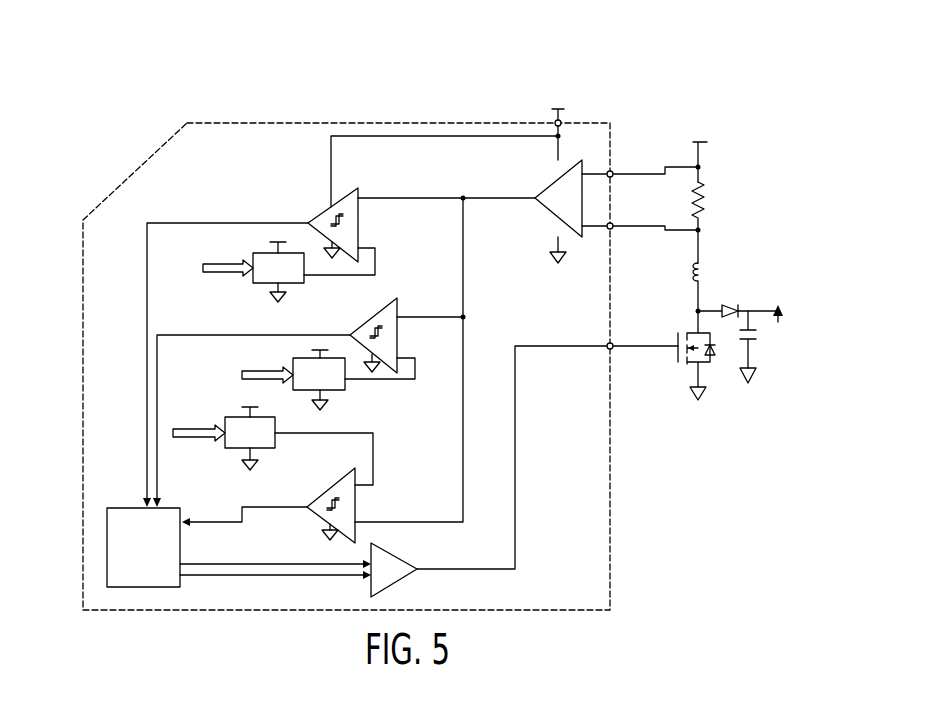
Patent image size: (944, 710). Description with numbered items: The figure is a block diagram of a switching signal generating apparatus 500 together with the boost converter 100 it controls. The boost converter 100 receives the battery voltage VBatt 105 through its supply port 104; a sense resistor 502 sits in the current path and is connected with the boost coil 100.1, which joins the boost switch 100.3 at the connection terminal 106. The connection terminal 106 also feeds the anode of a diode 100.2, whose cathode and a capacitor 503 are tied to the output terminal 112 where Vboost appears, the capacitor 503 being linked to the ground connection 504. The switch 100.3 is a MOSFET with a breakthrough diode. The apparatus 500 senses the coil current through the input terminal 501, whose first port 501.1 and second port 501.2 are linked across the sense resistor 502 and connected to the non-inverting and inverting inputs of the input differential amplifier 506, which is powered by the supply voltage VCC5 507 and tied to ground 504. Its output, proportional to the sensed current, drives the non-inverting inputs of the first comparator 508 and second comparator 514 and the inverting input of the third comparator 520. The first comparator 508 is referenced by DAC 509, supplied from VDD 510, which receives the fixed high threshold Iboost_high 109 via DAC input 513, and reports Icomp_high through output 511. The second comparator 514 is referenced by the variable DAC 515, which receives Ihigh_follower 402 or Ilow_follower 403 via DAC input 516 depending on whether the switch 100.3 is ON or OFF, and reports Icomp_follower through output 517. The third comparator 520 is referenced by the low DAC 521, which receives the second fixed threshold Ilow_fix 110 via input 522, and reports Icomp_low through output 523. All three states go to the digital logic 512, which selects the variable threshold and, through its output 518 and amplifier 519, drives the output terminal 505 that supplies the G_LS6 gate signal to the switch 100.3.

The boost converter 100 is at (717, 244).
The boost coil 100.1 is at (700, 265).
The diode 100.2 is at (718, 314).
The boost switch 100.3 is at (670, 373).
The supply port 104 is at (712, 146).
The battery voltage VBatt 105 is at (703, 140).
The connection terminal 106 is at (700, 309).
The fixed threshold value Iboost_high 109 is at (240, 372).
The second fixed threshold value Ilow_fix 110 is at (154, 430).
The output terminal 112 is at (784, 324).
The variable threshold value Ihigh_follower 402 is at (148, 252).
The variable threshold value Ilow_follower 403 is at (148, 252).
The switching signal generating apparatus 500 is at (139, 165).
The input terminal 501 is at (640, 154).
The first port 501.1 is at (612, 168).
The second port 501.2 is at (612, 229).
The sense resistor 502 is at (701, 200).
The capacitor 503 is at (753, 341).
The ground connection 504 is at (553, 265).
The output terminal 505 is at (608, 348).
The input differential amplifier 506 is at (577, 163).
The supply voltage VCC5 507 is at (552, 110).
The first comparator 508 is at (393, 298).
The digital analog converter 509 is at (346, 389).
The supply voltage VDD 510 is at (313, 350).
The output 511 is at (190, 333).
The digital logic 512 is at (107, 553).
The DAC input 513 is at (220, 362).
The second comparator 514 is at (350, 190).
The variable DAC 515 is at (248, 285).
The DAC input 516 is at (218, 273).
The output 517 is at (306, 220).
The output 518 is at (182, 576).
The amplifier 519 is at (405, 580).
The third comparator 520 is at (356, 497).
The low DAC 521 is at (233, 450).
The input 522 is at (192, 438).
The output 523 is at (254, 509).